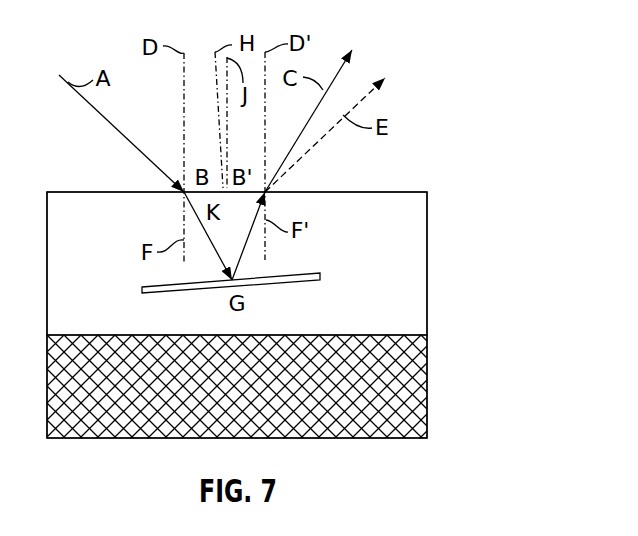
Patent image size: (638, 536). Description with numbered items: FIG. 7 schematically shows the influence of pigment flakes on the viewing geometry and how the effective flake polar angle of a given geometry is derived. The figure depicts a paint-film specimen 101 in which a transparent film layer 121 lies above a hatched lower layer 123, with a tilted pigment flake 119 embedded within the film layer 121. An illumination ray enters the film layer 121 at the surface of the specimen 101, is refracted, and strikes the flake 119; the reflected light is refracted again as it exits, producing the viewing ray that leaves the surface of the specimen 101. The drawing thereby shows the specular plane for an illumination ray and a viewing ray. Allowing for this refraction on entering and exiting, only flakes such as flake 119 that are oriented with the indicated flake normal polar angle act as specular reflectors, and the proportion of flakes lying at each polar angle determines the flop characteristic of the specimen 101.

The optical device 101 is at (408, 192).
The reflective layer 119 is at (302, 272).
The transparent substrate 121 is at (397, 296).
The light absorbing layer 123 is at (397, 385).